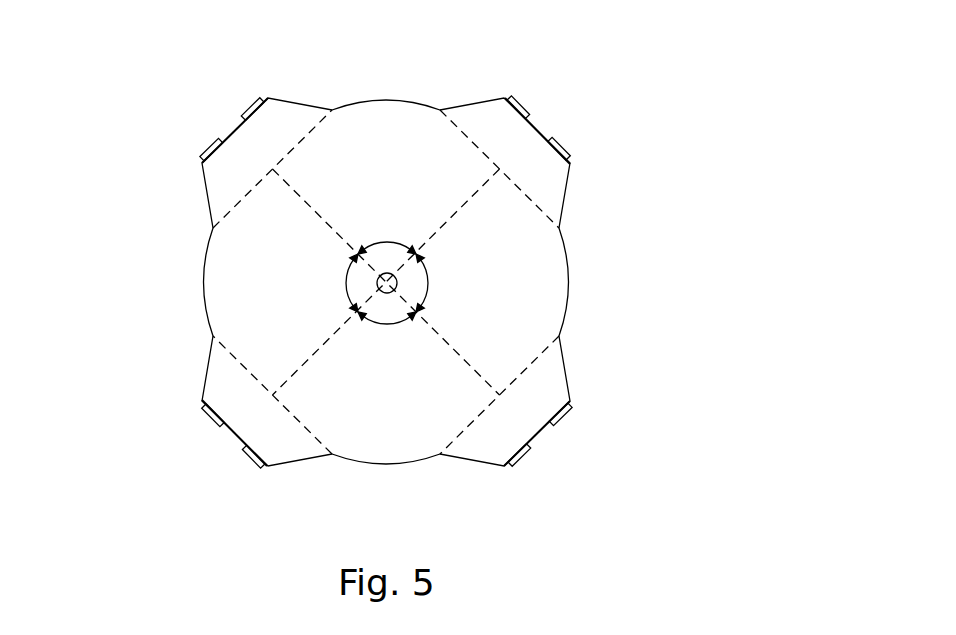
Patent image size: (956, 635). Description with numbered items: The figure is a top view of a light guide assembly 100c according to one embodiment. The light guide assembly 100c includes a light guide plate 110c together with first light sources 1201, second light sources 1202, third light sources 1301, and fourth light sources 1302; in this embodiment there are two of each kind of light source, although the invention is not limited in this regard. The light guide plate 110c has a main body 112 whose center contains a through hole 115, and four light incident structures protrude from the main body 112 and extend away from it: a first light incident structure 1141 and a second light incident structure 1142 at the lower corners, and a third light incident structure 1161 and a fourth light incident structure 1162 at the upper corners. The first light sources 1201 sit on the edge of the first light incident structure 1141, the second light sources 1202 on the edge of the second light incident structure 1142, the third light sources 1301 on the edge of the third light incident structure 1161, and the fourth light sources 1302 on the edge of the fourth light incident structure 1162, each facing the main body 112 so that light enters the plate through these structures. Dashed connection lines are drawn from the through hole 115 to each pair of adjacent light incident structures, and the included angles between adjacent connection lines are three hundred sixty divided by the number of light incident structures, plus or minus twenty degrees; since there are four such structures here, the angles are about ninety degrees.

The light guide assembly 100c is at (172, 52).
The light guide plate 110c is at (750, 333).
The main body 112 is at (553, 323).
The first light incident structure 1141 is at (247, 427).
The second light incident structure 1142 is at (530, 422).
The third light incident structure 1161 is at (243, 143).
The fourth light incident structure 1162 is at (525, 138).
The through hole 115 is at (372, 281).
The first light sources 1201 is at (248, 462).
The second light sources 1202 is at (552, 425).
The third light sources 1301 is at (208, 150).
The fourth light sources 1302 is at (523, 108).